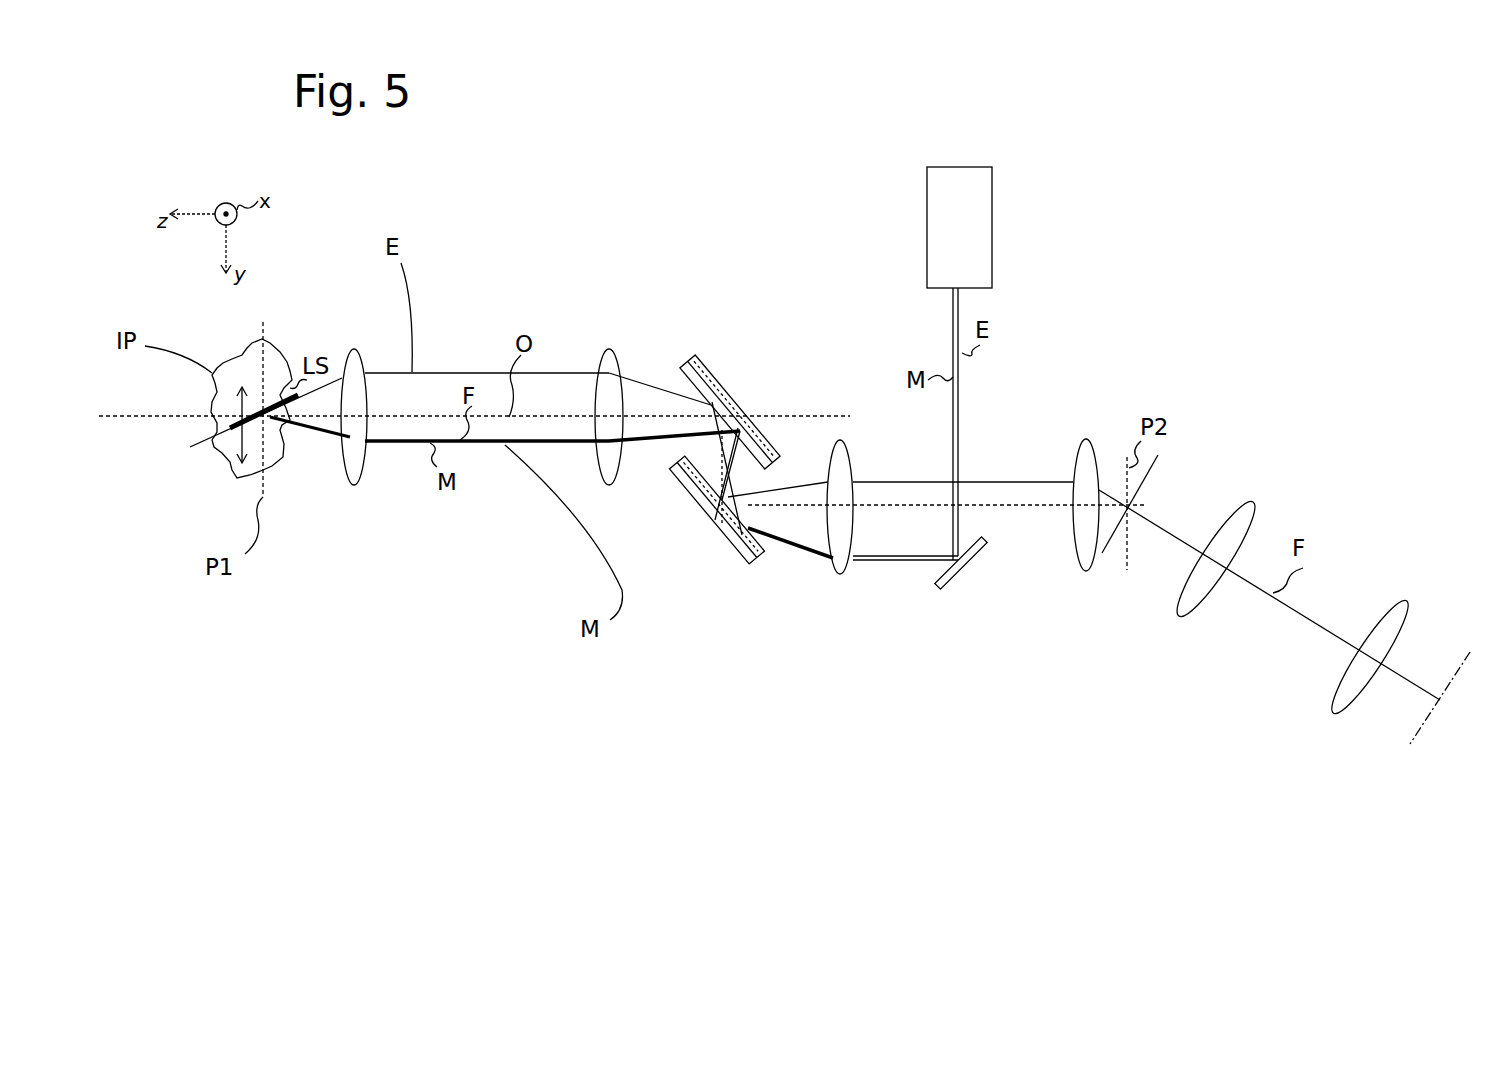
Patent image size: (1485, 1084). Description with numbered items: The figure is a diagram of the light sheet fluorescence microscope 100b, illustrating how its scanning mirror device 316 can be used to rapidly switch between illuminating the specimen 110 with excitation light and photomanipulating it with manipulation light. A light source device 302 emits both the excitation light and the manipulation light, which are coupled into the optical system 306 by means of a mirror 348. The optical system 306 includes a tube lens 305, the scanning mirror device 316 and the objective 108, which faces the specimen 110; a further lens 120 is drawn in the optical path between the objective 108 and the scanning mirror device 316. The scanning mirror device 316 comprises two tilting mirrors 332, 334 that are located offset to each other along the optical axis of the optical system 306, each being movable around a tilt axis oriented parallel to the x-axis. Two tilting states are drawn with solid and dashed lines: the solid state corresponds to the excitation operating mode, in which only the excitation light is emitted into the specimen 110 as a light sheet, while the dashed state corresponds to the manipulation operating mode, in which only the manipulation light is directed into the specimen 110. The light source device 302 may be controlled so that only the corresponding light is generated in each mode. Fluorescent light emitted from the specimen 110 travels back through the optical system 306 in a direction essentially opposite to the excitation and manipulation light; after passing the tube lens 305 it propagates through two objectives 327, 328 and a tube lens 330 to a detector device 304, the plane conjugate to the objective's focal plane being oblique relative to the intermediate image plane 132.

The light sheet fluorescence microscope 100b is at (1277, 104).
The specimen 110 is at (237, 482).
The objective 108 is at (362, 472).
The tube lens 120 is at (607, 350).
The tilting mirror 334 is at (678, 367).
The optical system 306 is at (788, 391).
The tilting mirror 332 is at (758, 560).
The scanning mirror device 316 is at (692, 530).
The tube lens 305 is at (845, 565).
The mirror 348 is at (953, 577).
The light source device 302 is at (988, 205).
The objective 327 is at (1090, 438).
The intermediate image plane 132 is at (1107, 547).
The objective 328 is at (1252, 503).
The tube lens 330 is at (1390, 606).
The detector device 304 is at (1412, 744).